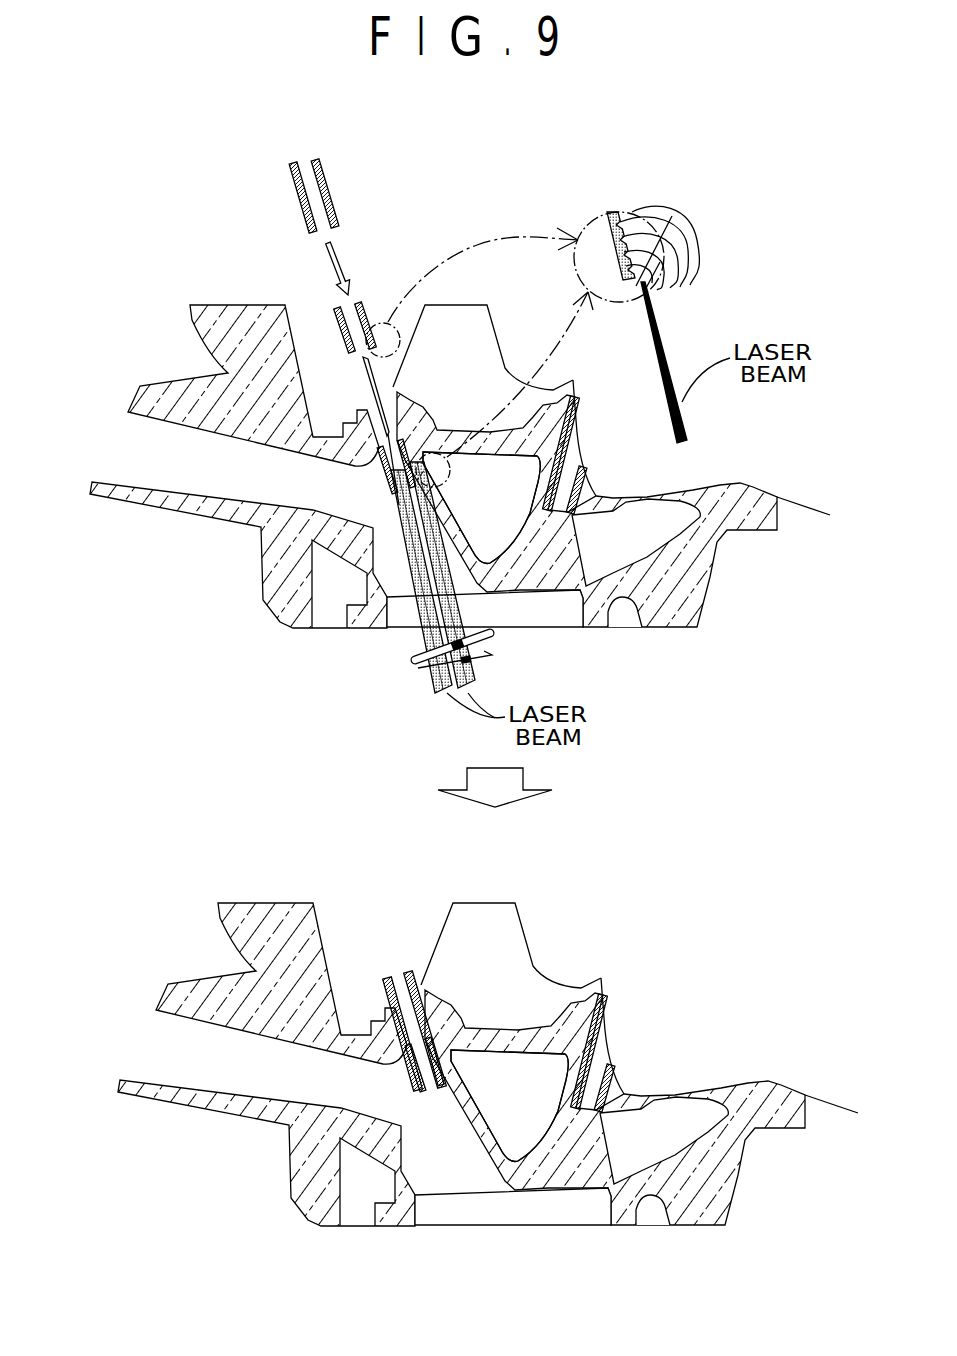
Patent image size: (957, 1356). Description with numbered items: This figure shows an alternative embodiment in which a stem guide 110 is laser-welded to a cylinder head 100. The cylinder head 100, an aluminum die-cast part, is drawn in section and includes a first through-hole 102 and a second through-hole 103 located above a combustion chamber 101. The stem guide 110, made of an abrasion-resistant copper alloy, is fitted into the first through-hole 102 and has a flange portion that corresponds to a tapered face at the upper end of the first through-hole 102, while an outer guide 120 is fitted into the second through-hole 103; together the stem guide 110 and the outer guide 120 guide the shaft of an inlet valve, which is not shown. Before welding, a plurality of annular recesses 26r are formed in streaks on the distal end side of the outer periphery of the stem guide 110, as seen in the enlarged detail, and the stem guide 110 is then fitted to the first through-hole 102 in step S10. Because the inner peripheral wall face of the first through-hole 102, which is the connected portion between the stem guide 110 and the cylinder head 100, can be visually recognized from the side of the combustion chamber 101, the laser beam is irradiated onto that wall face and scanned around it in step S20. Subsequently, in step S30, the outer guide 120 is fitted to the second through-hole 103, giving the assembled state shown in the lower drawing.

The cylinder head 100 is at (252, 338).
The combustion chamber 101 is at (533, 610).
The first through-hole 102 is at (437, 488).
The second through-hole 103 is at (398, 387).
The stem guide 110 is at (607, 228).
The outer guide 120 is at (327, 173).
The annular recesses 26r is at (676, 260).
The step S10 is at (358, 363).
The step S20 is at (397, 495).
The step S30 is at (311, 268).